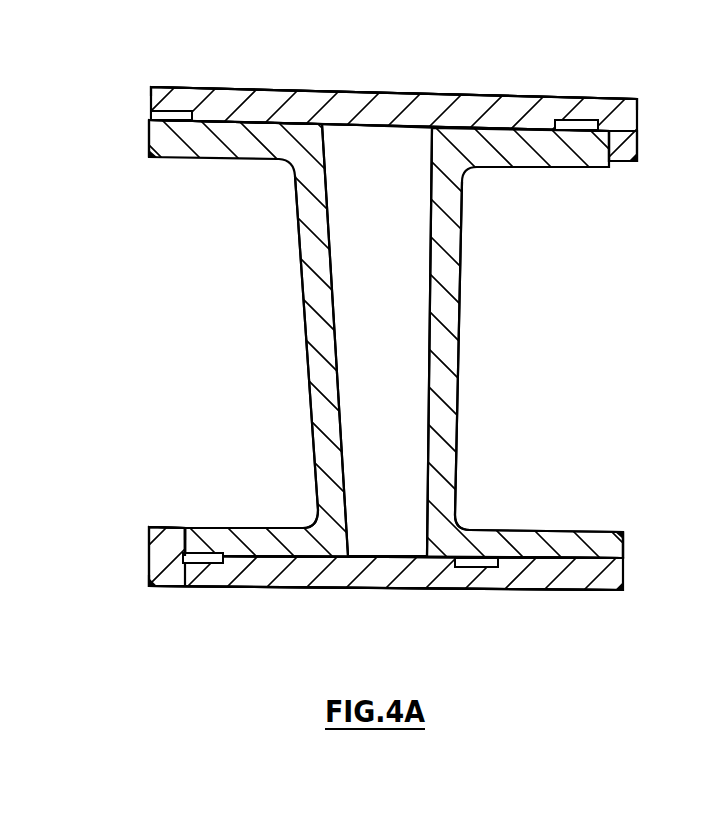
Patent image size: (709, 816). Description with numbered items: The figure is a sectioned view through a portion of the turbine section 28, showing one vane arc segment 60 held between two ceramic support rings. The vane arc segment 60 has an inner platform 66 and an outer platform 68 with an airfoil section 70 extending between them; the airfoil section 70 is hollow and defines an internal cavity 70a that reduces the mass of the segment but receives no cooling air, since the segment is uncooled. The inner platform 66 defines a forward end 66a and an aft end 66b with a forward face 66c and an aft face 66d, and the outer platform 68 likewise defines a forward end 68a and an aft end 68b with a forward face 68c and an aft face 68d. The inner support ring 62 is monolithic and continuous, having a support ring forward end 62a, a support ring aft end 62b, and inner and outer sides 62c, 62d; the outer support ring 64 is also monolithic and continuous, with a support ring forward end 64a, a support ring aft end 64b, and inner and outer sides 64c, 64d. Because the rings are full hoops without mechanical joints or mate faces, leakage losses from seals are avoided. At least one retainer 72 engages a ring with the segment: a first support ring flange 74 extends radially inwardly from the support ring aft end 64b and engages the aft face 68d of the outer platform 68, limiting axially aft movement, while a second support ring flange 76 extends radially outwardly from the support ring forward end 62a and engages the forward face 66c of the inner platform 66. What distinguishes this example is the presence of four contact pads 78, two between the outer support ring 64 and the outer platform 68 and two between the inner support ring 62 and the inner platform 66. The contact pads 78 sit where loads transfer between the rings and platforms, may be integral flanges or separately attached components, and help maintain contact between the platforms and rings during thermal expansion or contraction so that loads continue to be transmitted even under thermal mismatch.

The turbine section 28 is at (91, 561).
The vane arc segment 60 is at (222, 295).
The inner support ring 62 is at (522, 575).
The support ring forward end 62a is at (168, 598).
The support ring aft end 62b is at (602, 594).
The inner side 62c is at (522, 548).
The outer side 62d is at (435, 590).
The outer support ring 64 is at (446, 102).
The support ring forward end 64a is at (172, 82).
The support ring aft end 64b is at (614, 92).
The inner side 64c is at (280, 125).
The outer side 64d is at (313, 88).
The inner platform 66 is at (247, 532).
The forward end 66a is at (199, 523).
The aft end 66b is at (612, 526).
The forward face 66c is at (181, 533).
The aft face 66d is at (626, 545).
The outer platform 68 is at (205, 152).
The forward end 68a is at (166, 160).
The aft end 68b is at (558, 170).
The forward face 68c is at (150, 141).
The aft face 68d is at (632, 152).
The airfoil section 70 is at (298, 348).
The internal cavity 70a is at (450, 340).
The retainer 72 is at (643, 165).
The first support ring flange 74 is at (641, 130).
The second support ring flange 76 is at (158, 544).
The contact pad 78 is at (190, 110).